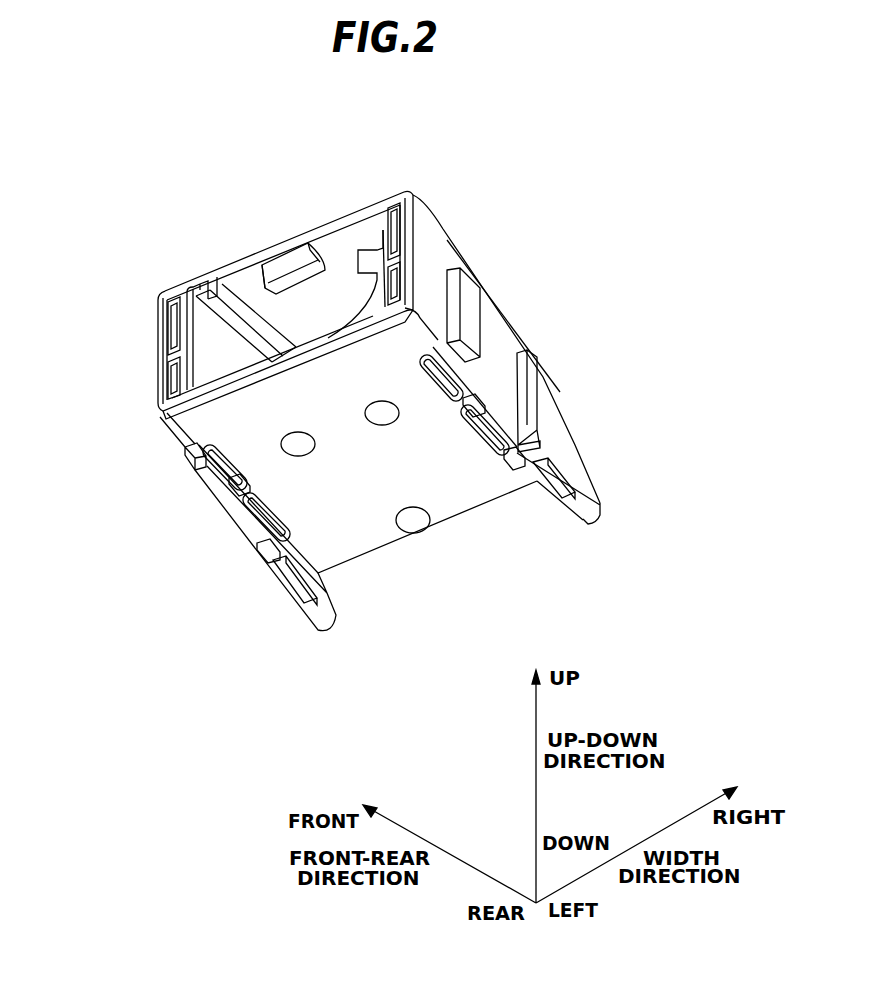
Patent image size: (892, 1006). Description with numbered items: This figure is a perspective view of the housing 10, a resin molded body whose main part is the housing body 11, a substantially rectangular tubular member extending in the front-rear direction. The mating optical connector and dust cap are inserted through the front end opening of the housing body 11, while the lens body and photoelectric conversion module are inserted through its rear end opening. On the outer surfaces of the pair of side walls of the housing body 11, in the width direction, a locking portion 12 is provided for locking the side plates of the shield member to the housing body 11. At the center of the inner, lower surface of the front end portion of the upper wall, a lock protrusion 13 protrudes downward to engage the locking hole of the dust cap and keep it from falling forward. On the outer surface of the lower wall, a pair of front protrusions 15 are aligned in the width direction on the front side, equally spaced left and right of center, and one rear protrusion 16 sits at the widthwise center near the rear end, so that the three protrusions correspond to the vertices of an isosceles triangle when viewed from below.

The housing 10 is at (437, 165).
The housing body 11 is at (157, 326).
The locking portion 12 is at (540, 380).
The lock protrusion 13 is at (292, 280).
The front protrusions 15 is at (380, 418).
The rear protrusion 16 is at (414, 526).